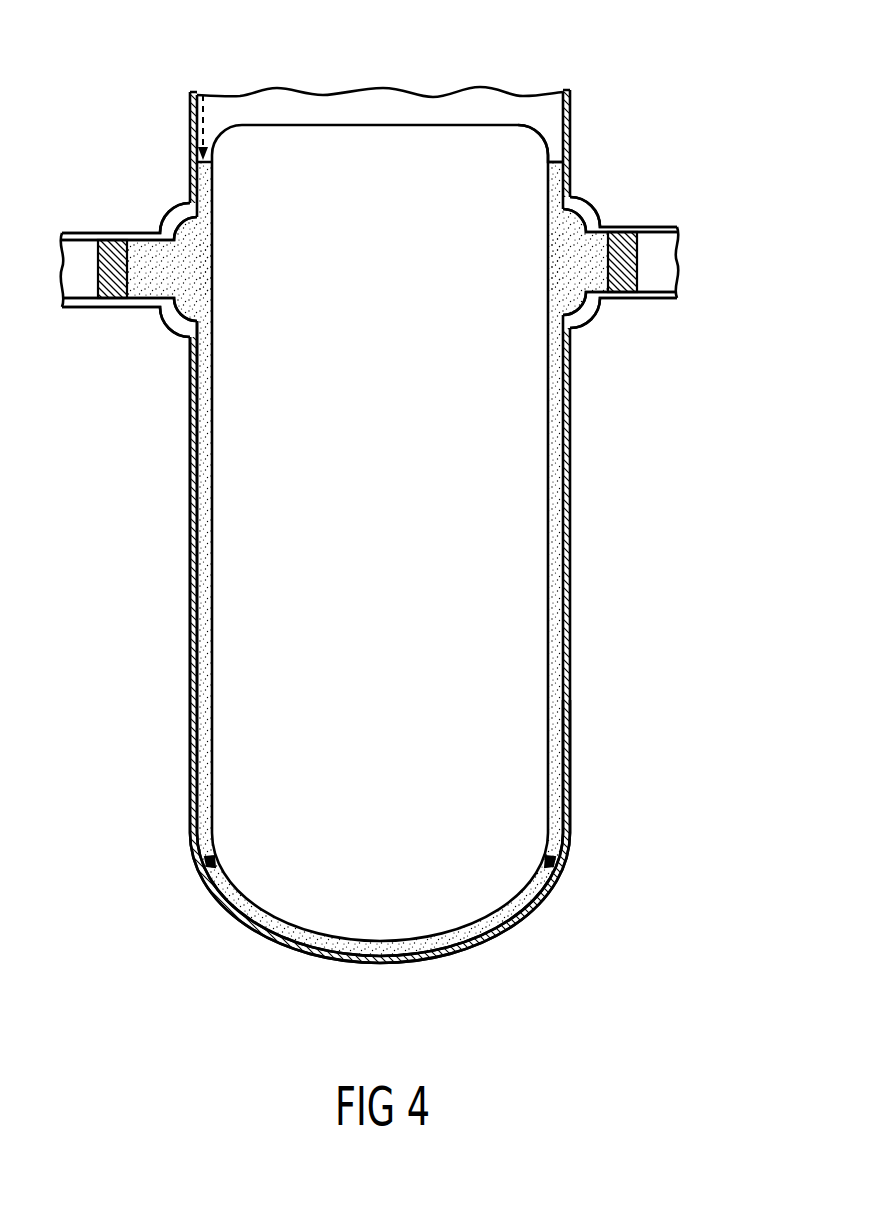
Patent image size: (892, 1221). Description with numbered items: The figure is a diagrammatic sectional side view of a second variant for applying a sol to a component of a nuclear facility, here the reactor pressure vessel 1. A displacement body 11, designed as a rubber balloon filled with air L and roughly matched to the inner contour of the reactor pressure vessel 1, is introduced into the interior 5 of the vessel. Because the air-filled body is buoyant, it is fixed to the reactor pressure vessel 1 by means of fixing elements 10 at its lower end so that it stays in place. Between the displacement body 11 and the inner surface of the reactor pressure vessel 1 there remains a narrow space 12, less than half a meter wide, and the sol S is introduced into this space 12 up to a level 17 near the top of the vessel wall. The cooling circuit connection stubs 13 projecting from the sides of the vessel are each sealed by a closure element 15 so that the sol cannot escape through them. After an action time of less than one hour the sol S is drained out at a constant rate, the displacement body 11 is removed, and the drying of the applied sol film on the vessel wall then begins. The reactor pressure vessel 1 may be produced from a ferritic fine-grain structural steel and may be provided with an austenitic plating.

The reactor pressure vessel 1 is at (568, 678).
The interior 5 is at (565, 790).
The fixing elements 10 is at (213, 890).
The displacement body 11 is at (550, 546).
The space 12 is at (200, 697).
The cooling circuit connection stubs 13 is at (158, 232).
The closure element 15 is at (119, 282).
The level 17 is at (555, 158).
The sol S is at (203, 93).
The air L is at (391, 520).